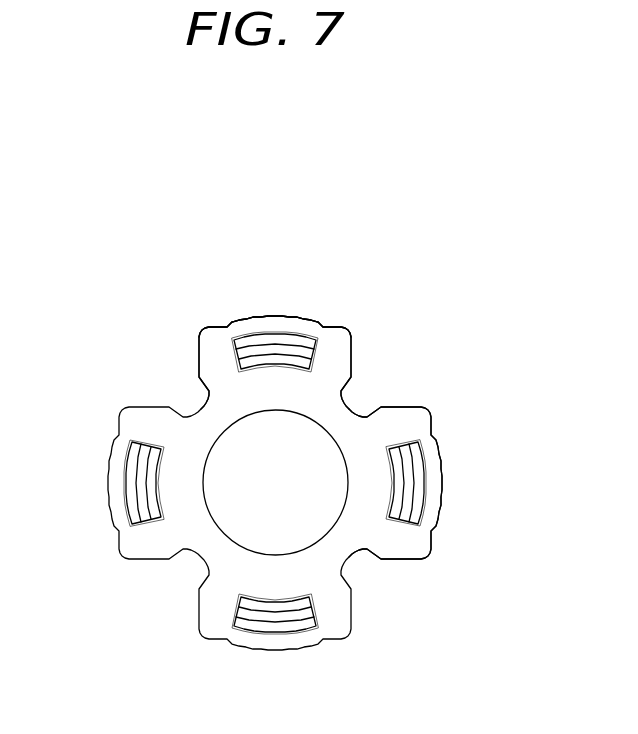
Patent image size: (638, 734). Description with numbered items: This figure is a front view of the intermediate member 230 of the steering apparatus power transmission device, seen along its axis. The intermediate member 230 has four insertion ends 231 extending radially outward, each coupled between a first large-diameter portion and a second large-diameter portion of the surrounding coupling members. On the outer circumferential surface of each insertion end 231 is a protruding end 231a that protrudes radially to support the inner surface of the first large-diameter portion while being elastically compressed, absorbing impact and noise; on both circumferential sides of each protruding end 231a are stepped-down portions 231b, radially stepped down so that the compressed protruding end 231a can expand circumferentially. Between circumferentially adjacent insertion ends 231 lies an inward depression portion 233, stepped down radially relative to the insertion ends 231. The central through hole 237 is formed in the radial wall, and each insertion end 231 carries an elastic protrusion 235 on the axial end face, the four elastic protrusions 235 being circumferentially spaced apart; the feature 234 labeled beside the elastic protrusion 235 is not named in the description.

The intermediate member 230 is at (85, 253).
The insertion end 231 is at (342, 248).
The protruding end 231a is at (285, 317).
The stepped-down portion 231b is at (221, 327).
The inward depression portion 233 is at (358, 402).
The rib 234 is at (297, 617).
The elastic protrusion 235 is at (258, 623).
The through hole 237 is at (218, 527).